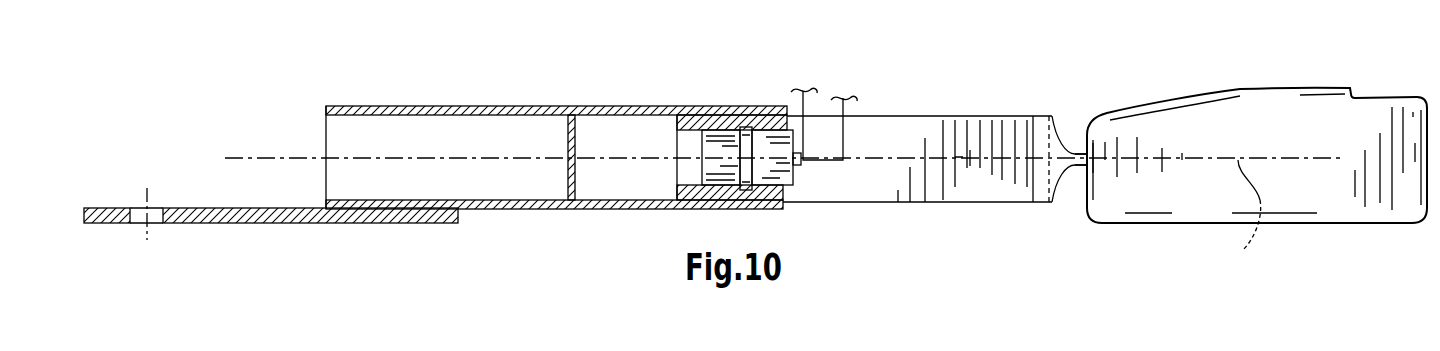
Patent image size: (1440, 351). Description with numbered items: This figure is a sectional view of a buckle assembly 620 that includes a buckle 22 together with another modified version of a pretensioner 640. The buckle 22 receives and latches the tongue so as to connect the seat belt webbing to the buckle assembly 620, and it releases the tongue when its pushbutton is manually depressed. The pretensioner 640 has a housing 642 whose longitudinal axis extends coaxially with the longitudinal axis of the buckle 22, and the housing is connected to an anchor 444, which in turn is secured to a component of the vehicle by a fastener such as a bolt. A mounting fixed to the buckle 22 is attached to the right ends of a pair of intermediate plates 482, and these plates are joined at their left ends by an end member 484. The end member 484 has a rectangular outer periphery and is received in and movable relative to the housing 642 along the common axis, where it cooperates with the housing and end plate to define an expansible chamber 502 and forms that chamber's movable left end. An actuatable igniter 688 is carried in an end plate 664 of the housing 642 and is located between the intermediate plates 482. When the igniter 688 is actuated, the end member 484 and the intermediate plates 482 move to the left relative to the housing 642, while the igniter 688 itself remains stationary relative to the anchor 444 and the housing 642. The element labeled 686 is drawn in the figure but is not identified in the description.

The buckle 22 is at (1244, 78).
The anchor 444 is at (112, 208).
The intermediate plates 482 is at (987, 115).
The end member 484 is at (567, 145).
The expansible chamber 502 is at (610, 140).
The buckle assembly 620 is at (1081, 86).
The pretensioner 640 is at (556, 120).
The housing 642 is at (378, 106).
The end plate 664 is at (794, 144).
The insert 686 is at (730, 193).
The igniter 688 is at (767, 150).